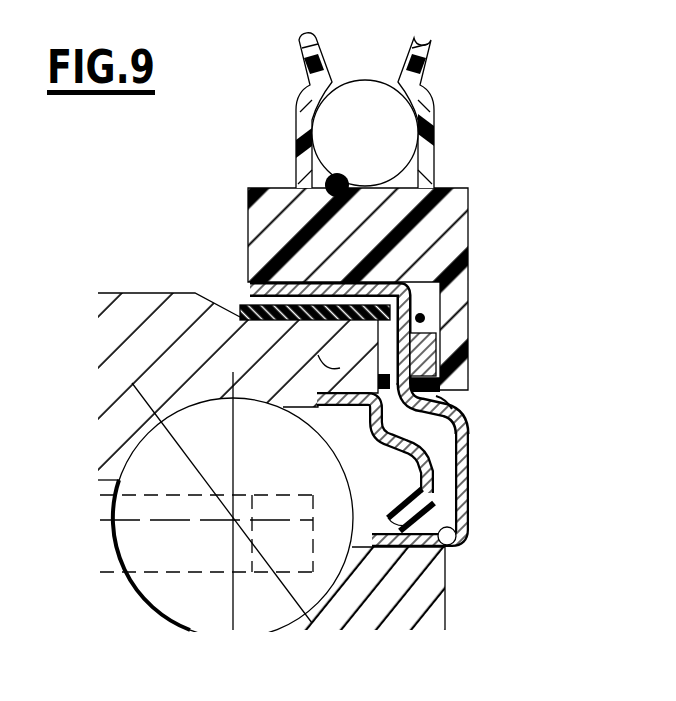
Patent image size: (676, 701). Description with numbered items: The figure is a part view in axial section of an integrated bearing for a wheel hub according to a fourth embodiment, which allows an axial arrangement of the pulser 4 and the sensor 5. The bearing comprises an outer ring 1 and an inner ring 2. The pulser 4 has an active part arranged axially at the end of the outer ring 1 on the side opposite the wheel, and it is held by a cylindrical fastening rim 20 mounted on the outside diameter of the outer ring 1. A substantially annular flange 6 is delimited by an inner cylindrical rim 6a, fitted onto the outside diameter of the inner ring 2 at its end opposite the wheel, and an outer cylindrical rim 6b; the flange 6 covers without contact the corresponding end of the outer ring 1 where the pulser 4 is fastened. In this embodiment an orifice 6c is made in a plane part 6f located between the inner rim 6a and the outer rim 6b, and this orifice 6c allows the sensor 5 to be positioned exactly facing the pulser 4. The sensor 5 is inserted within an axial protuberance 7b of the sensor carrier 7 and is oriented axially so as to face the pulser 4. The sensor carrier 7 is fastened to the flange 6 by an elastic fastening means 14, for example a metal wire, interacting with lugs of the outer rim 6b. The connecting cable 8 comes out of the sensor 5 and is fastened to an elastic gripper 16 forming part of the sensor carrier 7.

The outer ring 1 is at (133, 300).
The inner ring 2 is at (458, 600).
The pulser 4 is at (440, 396).
The sensor 5 is at (437, 352).
The flange 6 is at (480, 491).
The inner cylindrical rim 6a is at (464, 530).
The outer cylindrical rim 6b is at (251, 290).
The orifice 6c is at (425, 316).
The plane part 6f is at (455, 433).
The sensor carrier 7 is at (478, 225).
The axial protuberance 7b is at (427, 386).
The connecting cable 8 is at (392, 141).
The elastic fastening means 14 is at (335, 178).
The elastic gripper 16 is at (420, 47).
The cylindrical fastening rim 20 is at (242, 312).